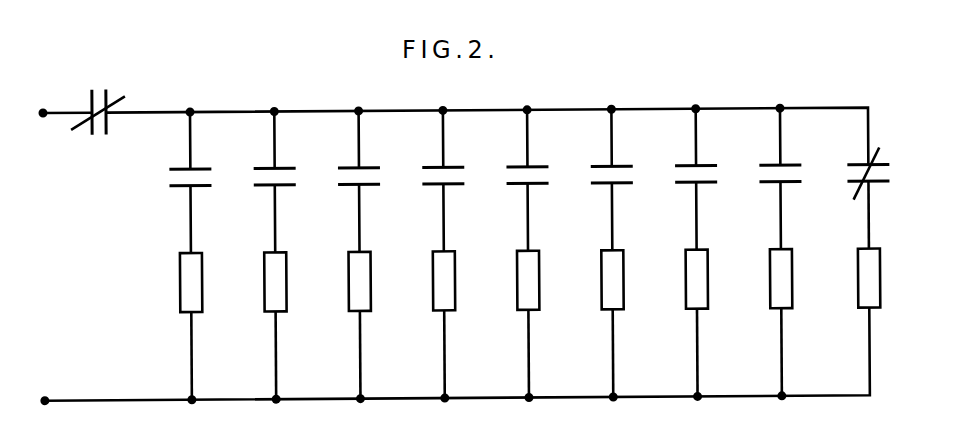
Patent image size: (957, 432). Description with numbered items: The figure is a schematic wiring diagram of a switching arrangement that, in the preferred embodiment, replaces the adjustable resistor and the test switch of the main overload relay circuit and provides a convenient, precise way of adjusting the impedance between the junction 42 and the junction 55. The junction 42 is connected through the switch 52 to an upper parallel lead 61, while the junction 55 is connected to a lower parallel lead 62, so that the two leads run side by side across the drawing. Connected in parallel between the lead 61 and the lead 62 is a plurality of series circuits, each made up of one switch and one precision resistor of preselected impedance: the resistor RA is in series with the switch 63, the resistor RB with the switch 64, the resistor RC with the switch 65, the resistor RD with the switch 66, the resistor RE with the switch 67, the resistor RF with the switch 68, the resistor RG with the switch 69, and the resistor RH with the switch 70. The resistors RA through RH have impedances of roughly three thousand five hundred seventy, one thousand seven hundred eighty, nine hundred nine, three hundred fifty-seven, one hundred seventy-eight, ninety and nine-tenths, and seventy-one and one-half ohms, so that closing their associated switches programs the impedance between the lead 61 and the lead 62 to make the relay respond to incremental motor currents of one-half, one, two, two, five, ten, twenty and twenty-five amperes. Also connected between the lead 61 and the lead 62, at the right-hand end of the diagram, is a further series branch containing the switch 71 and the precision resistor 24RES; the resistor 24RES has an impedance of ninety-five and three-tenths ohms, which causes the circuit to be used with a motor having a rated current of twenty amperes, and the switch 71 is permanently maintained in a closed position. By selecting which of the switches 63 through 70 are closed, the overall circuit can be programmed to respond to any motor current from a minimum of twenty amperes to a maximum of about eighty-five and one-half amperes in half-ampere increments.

The junction 42 is at (45, 110).
The switch 52 is at (108, 92).
The parallel lead 61 is at (228, 113).
The parallel lead 62 is at (126, 400).
The junction 55 is at (44, 399).
The switch 63 is at (198, 188).
The switch 64 is at (282, 188).
The switch 65 is at (367, 188).
The switch 66 is at (451, 188).
The switch 67 is at (535, 188).
The switch 68 is at (619, 188).
The switch 69 is at (704, 188).
The switch 70 is at (788, 188).
The switch 71 is at (861, 169).
The precision resistor RA is at (201, 300).
The precision resistor RB is at (285, 300).
The precision resistor RC is at (370, 300).
The precision resistor RD is at (454, 300).
The precision resistor RE is at (538, 300).
The precision resistor RF is at (622, 300).
The precision resistor RG is at (707, 300).
The precision resistor RH is at (791, 300).
The precision resistor 24RES is at (856, 290).